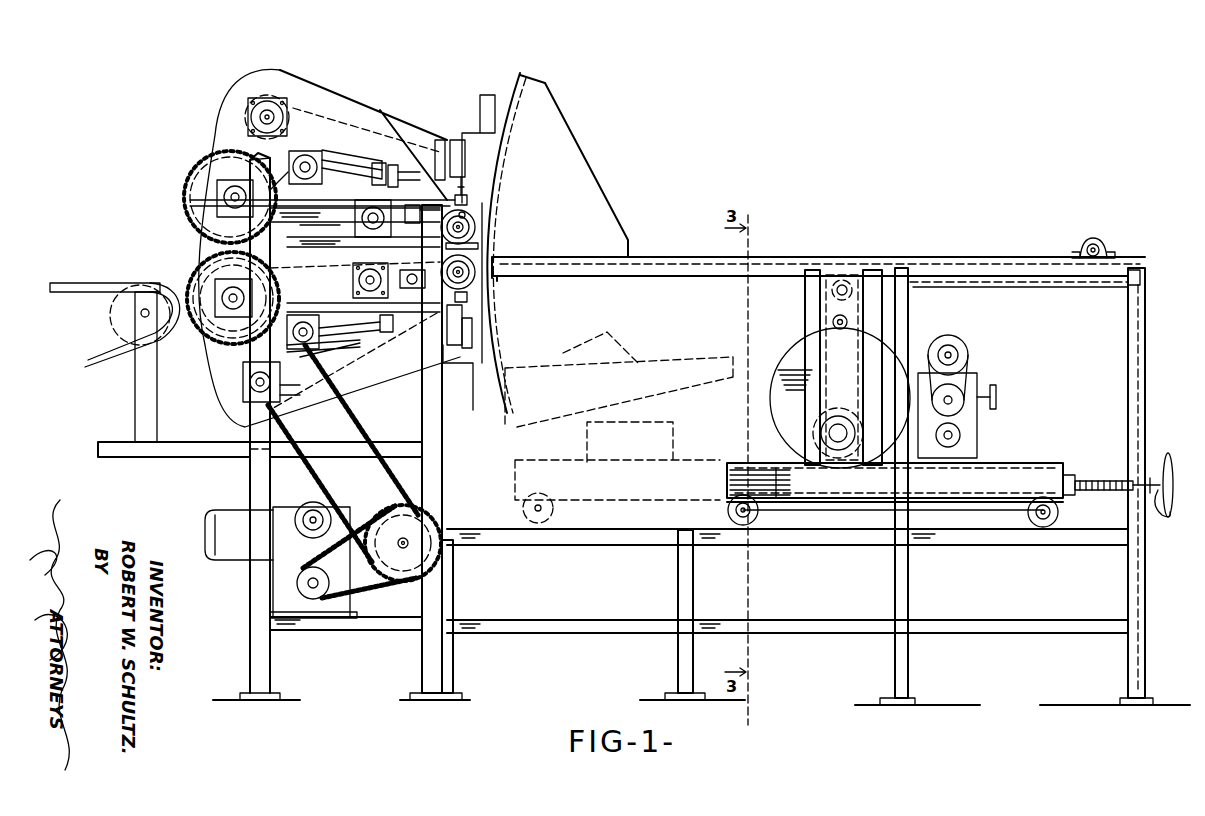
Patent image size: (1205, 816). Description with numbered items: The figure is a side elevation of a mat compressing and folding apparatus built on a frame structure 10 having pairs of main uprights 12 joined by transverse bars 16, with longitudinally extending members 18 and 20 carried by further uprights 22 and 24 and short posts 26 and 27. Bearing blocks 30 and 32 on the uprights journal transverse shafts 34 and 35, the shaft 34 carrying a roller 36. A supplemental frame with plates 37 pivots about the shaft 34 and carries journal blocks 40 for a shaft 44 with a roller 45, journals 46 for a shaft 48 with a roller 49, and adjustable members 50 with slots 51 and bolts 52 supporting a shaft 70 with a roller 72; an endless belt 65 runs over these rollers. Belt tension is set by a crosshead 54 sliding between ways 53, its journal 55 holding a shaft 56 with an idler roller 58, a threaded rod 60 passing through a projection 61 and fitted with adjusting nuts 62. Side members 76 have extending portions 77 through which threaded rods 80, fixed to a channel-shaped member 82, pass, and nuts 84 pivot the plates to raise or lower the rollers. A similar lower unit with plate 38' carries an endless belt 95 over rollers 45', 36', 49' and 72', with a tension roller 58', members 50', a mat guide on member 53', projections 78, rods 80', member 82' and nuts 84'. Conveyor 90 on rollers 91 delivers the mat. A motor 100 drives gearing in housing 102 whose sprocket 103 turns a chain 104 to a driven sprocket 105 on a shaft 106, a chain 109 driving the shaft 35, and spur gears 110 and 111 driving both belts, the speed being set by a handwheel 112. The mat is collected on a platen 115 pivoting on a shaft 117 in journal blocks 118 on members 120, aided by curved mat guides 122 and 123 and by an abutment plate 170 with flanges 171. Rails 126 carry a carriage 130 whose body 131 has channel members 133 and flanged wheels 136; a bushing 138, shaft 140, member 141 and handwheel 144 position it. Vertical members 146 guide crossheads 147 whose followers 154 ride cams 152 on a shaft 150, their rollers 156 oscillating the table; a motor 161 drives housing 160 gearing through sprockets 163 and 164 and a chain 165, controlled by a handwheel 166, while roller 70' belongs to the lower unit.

The frame structure 10 is at (1145, 386).
The main upwardly extending posts 12 is at (250, 603).
The transversely extending bars 16 is at (245, 462).
The longitudinally extending member 18 is at (606, 546).
The longitudinally extending member 20 is at (597, 620).
The uprights or posts 22 is at (908, 579).
The uprights or posts 24 is at (1128, 579).
The short posts 26 is at (453, 597).
The short posts 27 is at (693, 579).
The bearing blocks 30 is at (232, 180).
The bearing blocks 32 is at (233, 318).
The transversely extending shaft 34 is at (205, 206).
The transversely extending shaft 35 is at (215, 290).
The roller 36 is at (195, 190).
The roller 36' is at (212, 312).
The plate 37 is at (210, 122).
The plate 38' is at (237, 402).
The journal blocks 40 is at (286, 104).
The shaft 44 is at (267, 98).
The roller 45 is at (240, 105).
The roller 45' is at (223, 382).
The journals 46 is at (356, 226).
The shaft 48 is at (357, 217).
The roller 49 is at (366, 200).
The guide roller 49' is at (351, 279).
The members 50 is at (467, 251).
The members 50' is at (407, 289).
The slots 51 is at (405, 226).
The bolts 52 is at (412, 205).
The ways 53 is at (352, 151).
The lower drive shaft 53' is at (355, 212).
The crosshead 54 is at (323, 158).
The journal 55 is at (300, 152).
The shaft 56 is at (314, 141).
The idler roller 58 is at (273, 162).
The roller 58' is at (328, 362).
The threaded rod 60 is at (352, 159).
The projection 61 is at (399, 176).
The adjusting nuts 62 is at (379, 163).
The endless belt 65 is at (332, 97).
The shaft 70 is at (490, 231).
The lower feed roller 70' is at (491, 264).
The roller 72 is at (502, 224).
The guide roller 72' is at (494, 276).
The side members 76 is at (252, 222).
The extending portions 77 is at (466, 206).
The projections 78 is at (465, 316).
The threaded rods 80 is at (487, 159).
The threaded rods 80' is at (497, 334).
The channel-shaped member 82 is at (460, 149).
The member 82' is at (462, 306).
The threaded nuts 84 is at (493, 192).
The nuts 84' is at (498, 301).
The conveyor 90 is at (88, 283).
The rollers 91 is at (135, 318).
The endless belt 95 is at (303, 408).
The motor 100 is at (226, 560).
The housing 102 is at (290, 618).
The sprocket 103 is at (322, 596).
The chain 104 is at (366, 596).
The driven sprocket 105 is at (425, 520).
The shaft 106 is at (438, 522).
The chain 109 is at (322, 470).
The spur gear 110 is at (192, 170).
The spur gear 111 is at (200, 262).
The handwheel 112 is at (308, 503).
The platen or table 115 is at (688, 243).
The shaft 117 is at (1100, 240).
The journal blocks 118 is at (1076, 250).
The longitudinally extending members 120 is at (1010, 288).
The mat guide 122 is at (505, 418).
The mat guide 123 is at (516, 82).
The rails or ways 126 is at (857, 503).
The carriage 130 is at (1018, 460).
The base or body 131 is at (730, 468).
The channel-shaped members 133 is at (970, 500).
The flanged wheels 136 is at (760, 512).
The threaded bushing 138 is at (1072, 475).
The shaft 140 is at (1082, 481).
The member 141 is at (1160, 518).
The handwheel 144 is at (1169, 485).
The vertically disposed members 146 is at (872, 268).
The crossheads or plates 147 is at (833, 320).
The shaft 150 is at (838, 420).
The cams 152 is at (800, 363).
The cam follower or roller 154 is at (830, 336).
The rollers or members 156 is at (832, 292).
The housing 160 is at (977, 429).
The motor 161 is at (968, 355).
The sprocket 163 is at (960, 438).
The sprocket 164 is at (775, 470).
The driving chain 165 is at (895, 480).
The handwheel 166 is at (996, 389).
The abutment plate 170 is at (530, 80).
The rearwardly extending flanges 171 is at (592, 172).